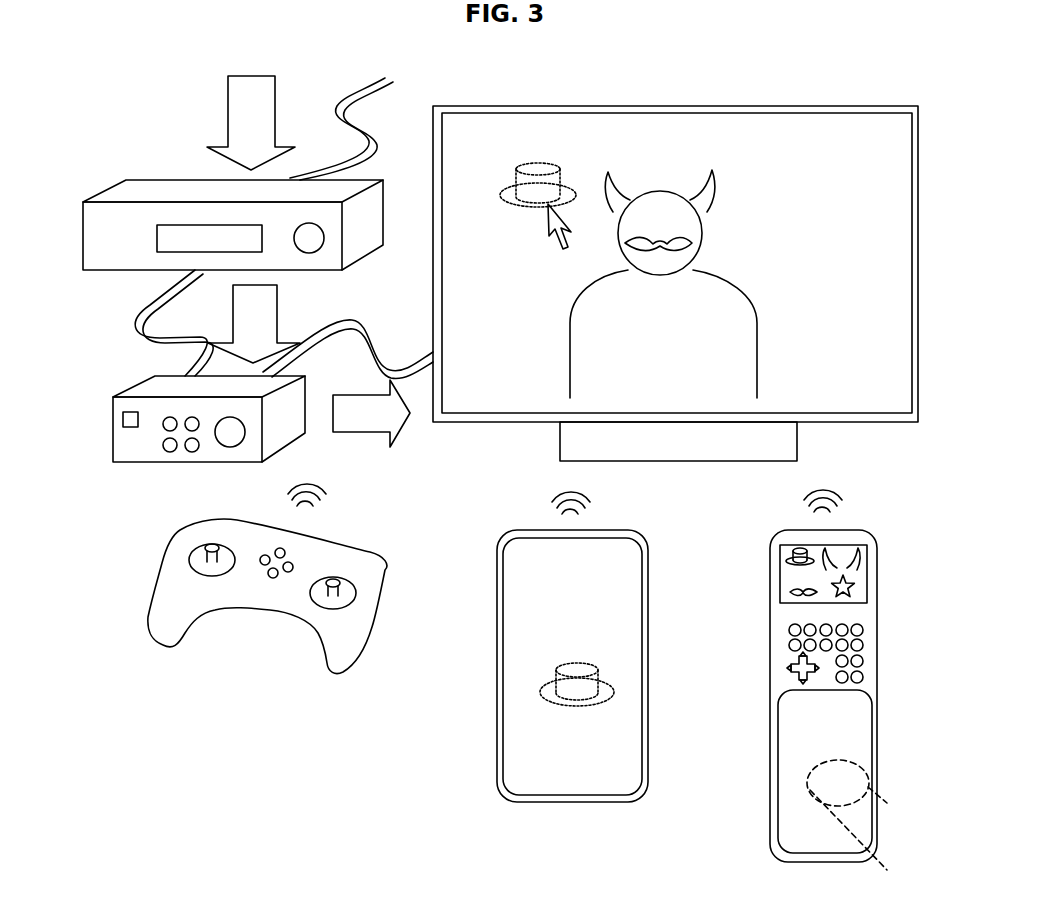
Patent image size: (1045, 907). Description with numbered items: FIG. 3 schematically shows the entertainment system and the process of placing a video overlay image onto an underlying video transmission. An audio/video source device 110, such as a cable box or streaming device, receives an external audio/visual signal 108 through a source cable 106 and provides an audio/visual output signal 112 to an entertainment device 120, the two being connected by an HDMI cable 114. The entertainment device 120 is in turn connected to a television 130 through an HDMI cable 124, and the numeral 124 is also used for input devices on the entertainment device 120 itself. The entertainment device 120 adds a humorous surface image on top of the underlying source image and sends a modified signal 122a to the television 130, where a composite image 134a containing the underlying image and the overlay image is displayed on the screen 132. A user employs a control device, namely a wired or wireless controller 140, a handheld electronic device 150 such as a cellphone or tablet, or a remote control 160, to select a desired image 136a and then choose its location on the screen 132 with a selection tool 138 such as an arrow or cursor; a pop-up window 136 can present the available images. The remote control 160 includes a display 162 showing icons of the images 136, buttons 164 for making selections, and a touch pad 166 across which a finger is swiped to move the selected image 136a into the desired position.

The source cable 106 is at (372, 79).
The external audio/visual signal 108 is at (269, 129).
The audio/video source device 110 is at (112, 180).
The audio/visual output signal 112 is at (273, 339).
The HDMI cable 114 is at (150, 310).
The entertainment device 120 is at (125, 388).
The modified signal 122a is at (385, 425).
The HDMI cable 124 is at (362, 324).
The television 130 is at (675, 290).
The screen 132 is at (883, 159).
The composite image 134a is at (713, 240).
The desired image 136a is at (550, 162).
The selection tool 138 is at (558, 240).
The controller 140 is at (155, 573).
The handheld electronic device 150 is at (497, 542).
The remote control 160 is at (815, 680).
The display 162 is at (809, 589).
The buttons 164 is at (867, 672).
The touch pad 166 is at (785, 722).
The pop-up window 136 is at (790, 575).